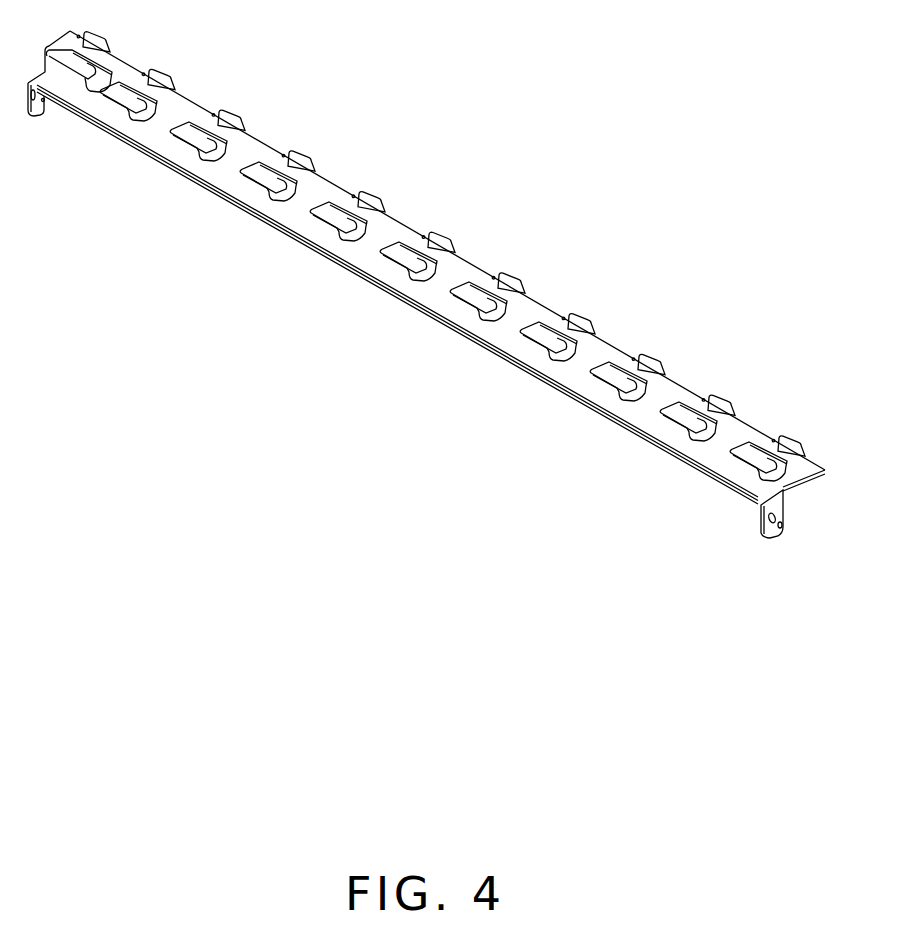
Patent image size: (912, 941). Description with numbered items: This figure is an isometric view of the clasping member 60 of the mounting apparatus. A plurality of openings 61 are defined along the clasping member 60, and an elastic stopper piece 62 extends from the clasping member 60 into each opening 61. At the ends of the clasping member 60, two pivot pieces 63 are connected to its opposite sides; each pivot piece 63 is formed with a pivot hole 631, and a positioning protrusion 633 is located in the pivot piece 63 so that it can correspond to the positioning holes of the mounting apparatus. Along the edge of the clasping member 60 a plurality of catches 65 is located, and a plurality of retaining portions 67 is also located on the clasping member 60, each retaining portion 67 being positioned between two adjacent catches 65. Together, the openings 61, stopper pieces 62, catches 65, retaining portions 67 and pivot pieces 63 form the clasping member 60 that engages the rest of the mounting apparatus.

The clasping member 60 is at (312, 124).
The opening 61 is at (497, 318).
The elastic stopper piece 62 is at (473, 300).
The pivot piece 63 is at (767, 538).
The pivot hole 631 is at (763, 518).
The positioning protrusion 633 is at (783, 526).
The catch 65 is at (647, 360).
The retaining portion 67 is at (745, 420).